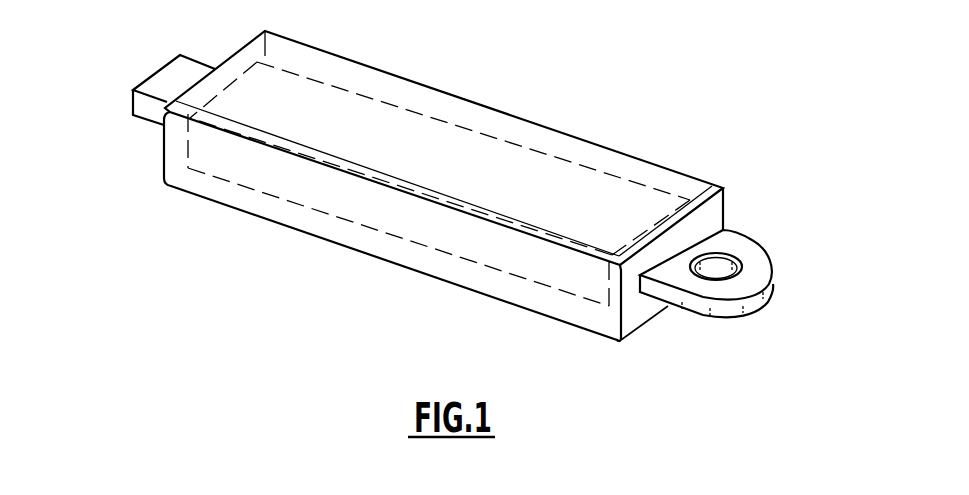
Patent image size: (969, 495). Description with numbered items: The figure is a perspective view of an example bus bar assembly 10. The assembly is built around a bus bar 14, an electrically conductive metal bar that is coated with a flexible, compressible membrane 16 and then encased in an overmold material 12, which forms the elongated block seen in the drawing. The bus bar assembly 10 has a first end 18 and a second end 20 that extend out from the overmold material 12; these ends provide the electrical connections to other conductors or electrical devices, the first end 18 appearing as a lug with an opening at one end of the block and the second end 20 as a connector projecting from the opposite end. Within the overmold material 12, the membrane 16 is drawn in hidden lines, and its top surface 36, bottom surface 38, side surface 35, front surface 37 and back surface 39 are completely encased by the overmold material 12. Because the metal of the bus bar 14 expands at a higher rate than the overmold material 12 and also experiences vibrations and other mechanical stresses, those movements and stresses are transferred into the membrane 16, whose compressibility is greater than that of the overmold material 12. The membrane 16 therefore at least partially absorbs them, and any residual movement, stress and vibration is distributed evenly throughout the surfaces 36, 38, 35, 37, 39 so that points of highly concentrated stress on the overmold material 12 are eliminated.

The bus bar assembly 10 is at (792, 77).
The overmold material 12 is at (716, 207).
The bus bar 14 is at (653, 293).
The membrane 16 is at (565, 268).
The first end 18 is at (790, 272).
The second end 20 is at (116, 95).
The side surface 35 is at (416, 95).
The top surface 36 is at (460, 148).
The front surface 37 is at (666, 247).
The bottom surface 38 is at (389, 252).
The back surface 39 is at (248, 58).